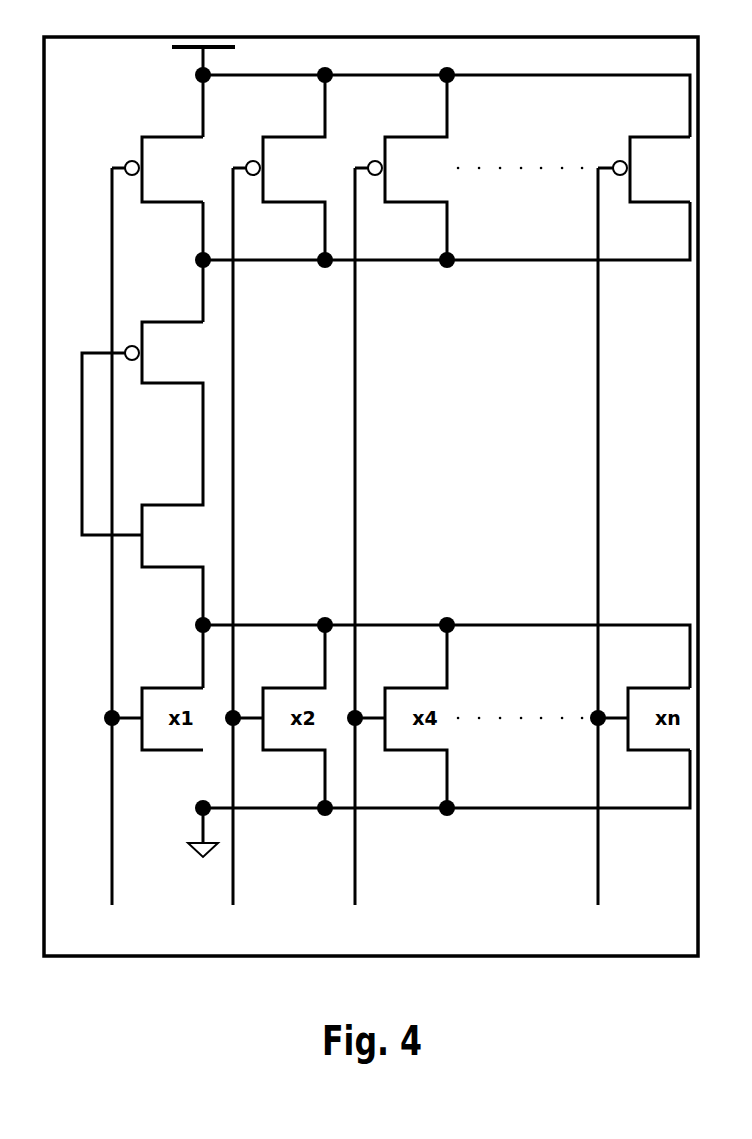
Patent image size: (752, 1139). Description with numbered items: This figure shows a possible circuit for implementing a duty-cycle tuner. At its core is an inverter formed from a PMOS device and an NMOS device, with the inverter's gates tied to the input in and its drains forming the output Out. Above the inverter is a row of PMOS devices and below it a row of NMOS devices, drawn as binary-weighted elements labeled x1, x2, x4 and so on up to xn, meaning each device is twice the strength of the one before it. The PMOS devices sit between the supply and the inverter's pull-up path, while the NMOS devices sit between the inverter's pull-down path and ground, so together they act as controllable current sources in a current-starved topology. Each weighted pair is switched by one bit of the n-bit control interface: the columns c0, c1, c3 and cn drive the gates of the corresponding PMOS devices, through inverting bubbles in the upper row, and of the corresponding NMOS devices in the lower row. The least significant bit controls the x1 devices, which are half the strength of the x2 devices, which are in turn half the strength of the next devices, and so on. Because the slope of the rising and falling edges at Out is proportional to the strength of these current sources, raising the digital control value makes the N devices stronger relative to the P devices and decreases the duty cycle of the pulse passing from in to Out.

The transistor x1 is at (157, 229).
The transistor x2 is at (279, 167).
The transistor x4 is at (401, 167).
The transistor xn is at (644, 169).
The control line c0 is at (112, 556).
The least significant control bit c1 is at (233, 556).
The control line c3 is at (355, 556).
The most significant control bit cn is at (598, 556).
The input in is at (98, 444).
The output Out is at (164, 505).